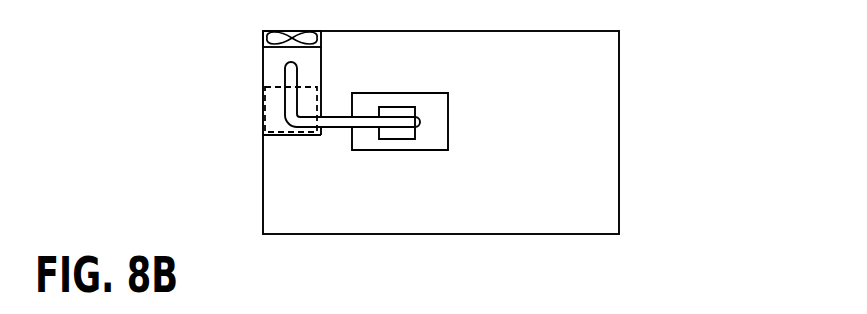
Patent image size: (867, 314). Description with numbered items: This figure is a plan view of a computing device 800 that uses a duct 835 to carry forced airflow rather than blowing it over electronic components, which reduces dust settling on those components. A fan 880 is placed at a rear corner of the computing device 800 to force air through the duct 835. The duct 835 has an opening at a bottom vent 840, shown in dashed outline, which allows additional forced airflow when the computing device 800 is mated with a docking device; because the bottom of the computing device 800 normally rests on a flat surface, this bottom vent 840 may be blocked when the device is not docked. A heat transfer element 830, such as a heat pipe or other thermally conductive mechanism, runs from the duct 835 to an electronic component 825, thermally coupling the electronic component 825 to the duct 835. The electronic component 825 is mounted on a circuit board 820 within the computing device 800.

The computing device 800 is at (652, 149).
The circuit board 820 is at (453, 120).
The electronic component 825 is at (398, 133).
The heat transfer element 830 is at (338, 117).
The duct 835 is at (277, 136).
The bottom vent 840 is at (275, 111).
The fan 880 is at (263, 41).